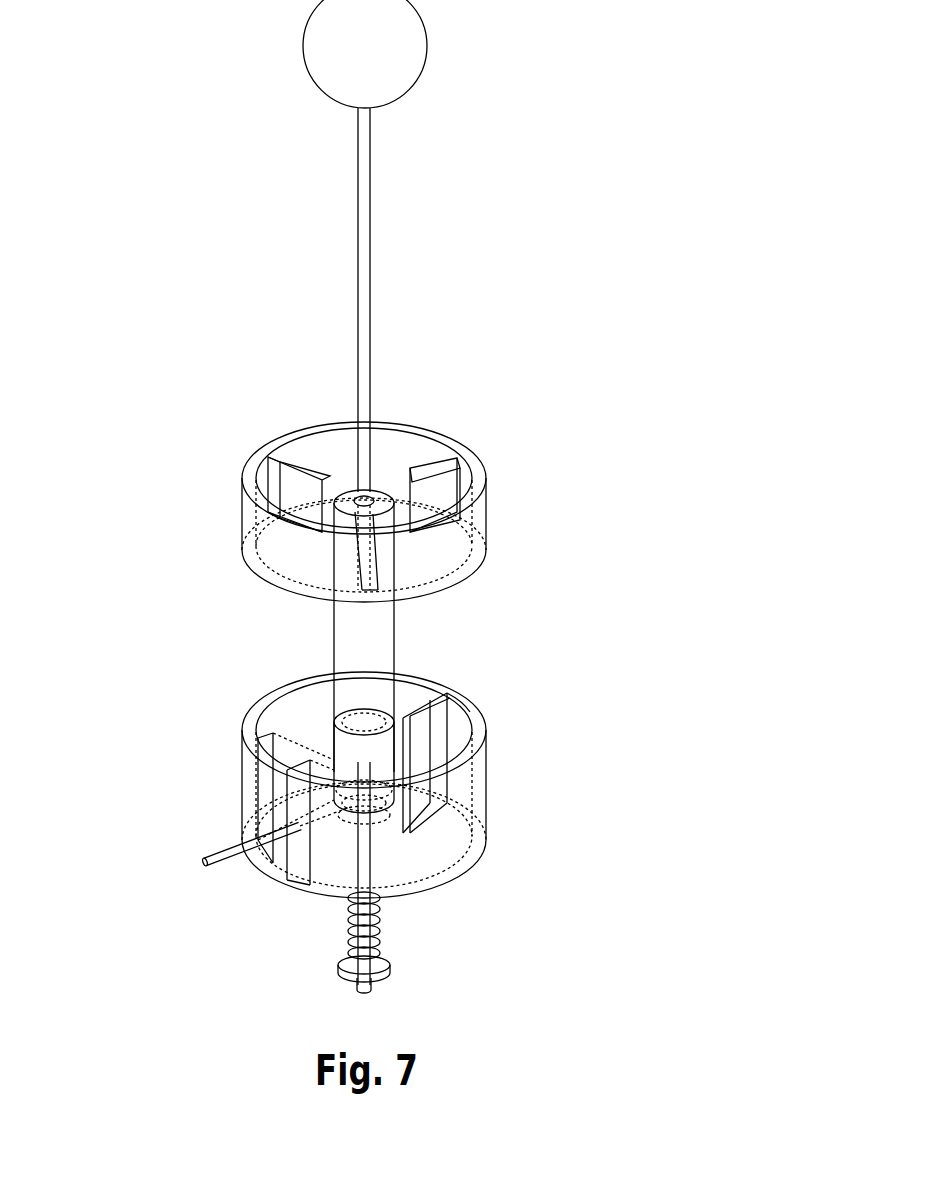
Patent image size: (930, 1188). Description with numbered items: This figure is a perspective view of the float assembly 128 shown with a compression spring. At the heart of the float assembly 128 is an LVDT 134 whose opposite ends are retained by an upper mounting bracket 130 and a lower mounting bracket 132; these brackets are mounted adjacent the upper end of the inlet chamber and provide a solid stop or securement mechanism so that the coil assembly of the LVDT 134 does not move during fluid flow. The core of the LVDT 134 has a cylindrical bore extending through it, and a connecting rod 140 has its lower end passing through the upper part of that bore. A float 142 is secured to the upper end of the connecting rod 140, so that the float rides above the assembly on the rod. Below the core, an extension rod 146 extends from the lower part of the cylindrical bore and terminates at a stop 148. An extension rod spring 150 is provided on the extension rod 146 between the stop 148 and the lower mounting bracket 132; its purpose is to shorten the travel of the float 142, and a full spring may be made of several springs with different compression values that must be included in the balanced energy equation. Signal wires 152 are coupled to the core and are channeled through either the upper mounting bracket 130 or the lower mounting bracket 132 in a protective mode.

The float assembly 128 is at (550, 128).
The float 142 is at (315, 100).
The connecting rod 140 is at (345, 165).
The upper mounting bracket 130 is at (490, 524).
The LVDT 134 is at (410, 630).
The lower mounting bracket 132 is at (487, 767).
The signal wires 152 is at (187, 862).
The extension rod 146 is at (372, 870).
The extension rod spring 150 is at (384, 928).
The stop 148 is at (392, 975).